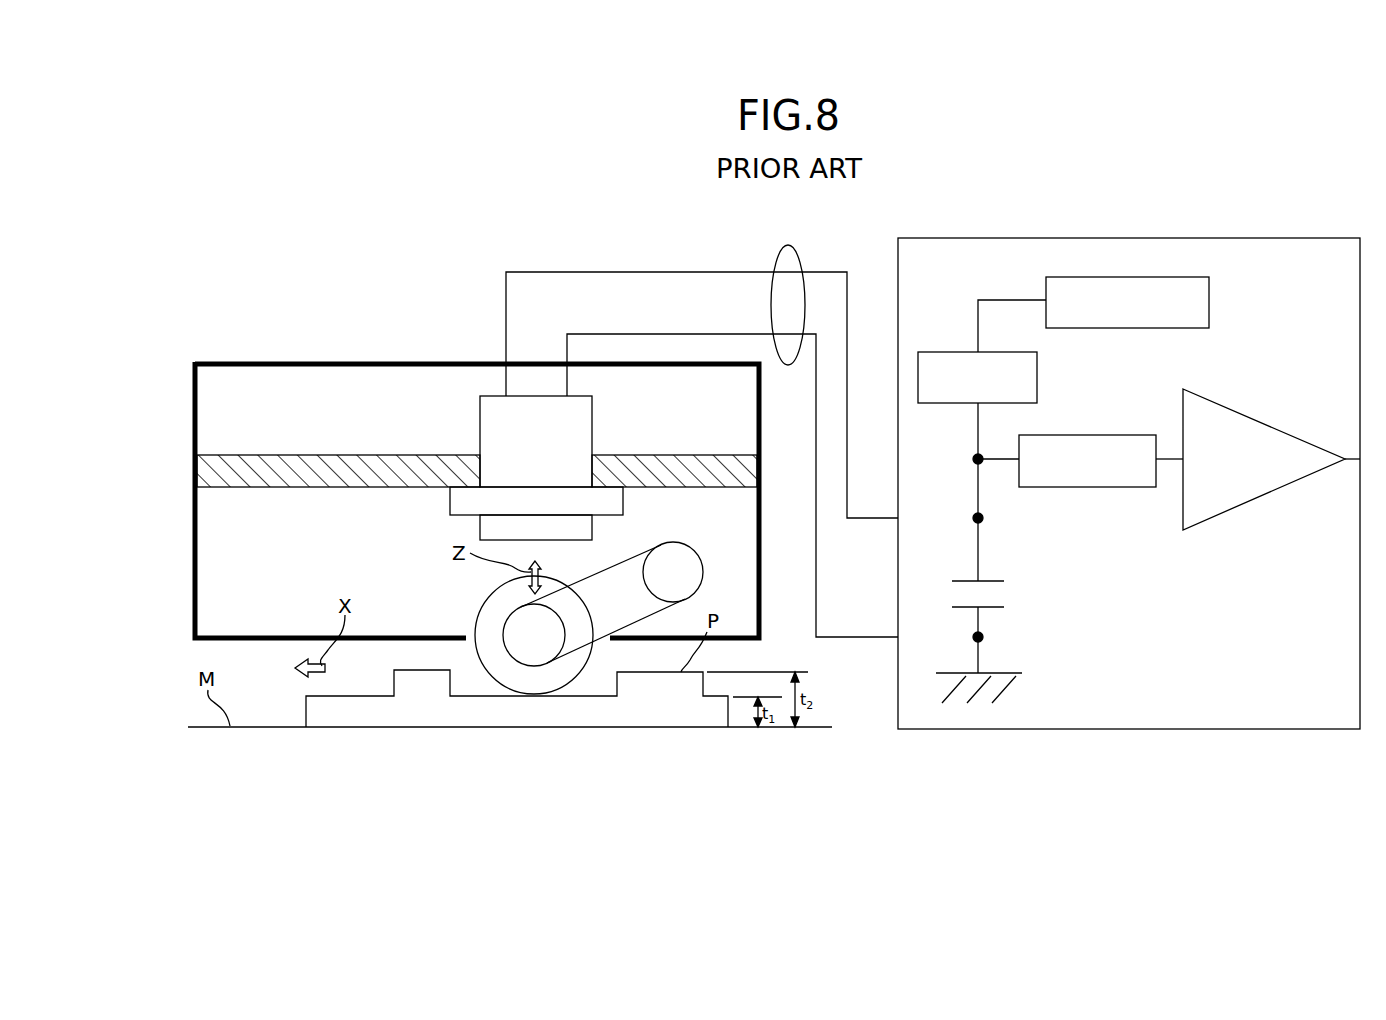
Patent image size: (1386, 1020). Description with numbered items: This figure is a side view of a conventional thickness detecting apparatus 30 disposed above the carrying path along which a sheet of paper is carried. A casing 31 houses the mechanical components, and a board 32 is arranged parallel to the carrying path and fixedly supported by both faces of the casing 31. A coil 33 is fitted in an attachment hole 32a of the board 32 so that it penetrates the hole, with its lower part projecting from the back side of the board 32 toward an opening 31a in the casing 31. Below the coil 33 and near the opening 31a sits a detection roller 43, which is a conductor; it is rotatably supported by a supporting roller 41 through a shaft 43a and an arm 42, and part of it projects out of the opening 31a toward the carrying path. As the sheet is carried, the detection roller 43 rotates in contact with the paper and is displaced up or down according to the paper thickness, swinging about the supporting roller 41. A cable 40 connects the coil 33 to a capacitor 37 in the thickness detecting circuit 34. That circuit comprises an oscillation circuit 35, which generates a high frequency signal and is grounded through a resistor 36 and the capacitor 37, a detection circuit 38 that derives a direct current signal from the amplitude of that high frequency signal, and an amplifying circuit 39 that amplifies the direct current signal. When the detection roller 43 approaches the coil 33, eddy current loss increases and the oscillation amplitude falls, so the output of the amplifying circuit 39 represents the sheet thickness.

The thickness detecting apparatus 30 is at (1199, 168).
The casing 31 is at (313, 362).
The opening 31a is at (467, 645).
The board 32 is at (258, 455).
The attachment hole 32a is at (490, 470).
The coil 33 is at (590, 436).
The thickness detecting circuit 34 is at (1327, 240).
The oscillation circuit 35 is at (1170, 277).
The resistor 36 is at (1001, 353).
The capacitor 37 is at (996, 597).
The detection circuit 38 is at (1112, 435).
The amplifying circuit 39 is at (1261, 425).
The cable 40 is at (788, 246).
The supporting roller 41 is at (702, 563).
The arm 42 is at (625, 583).
The detection roller 43 is at (485, 608).
The shaft 43a is at (534, 655).